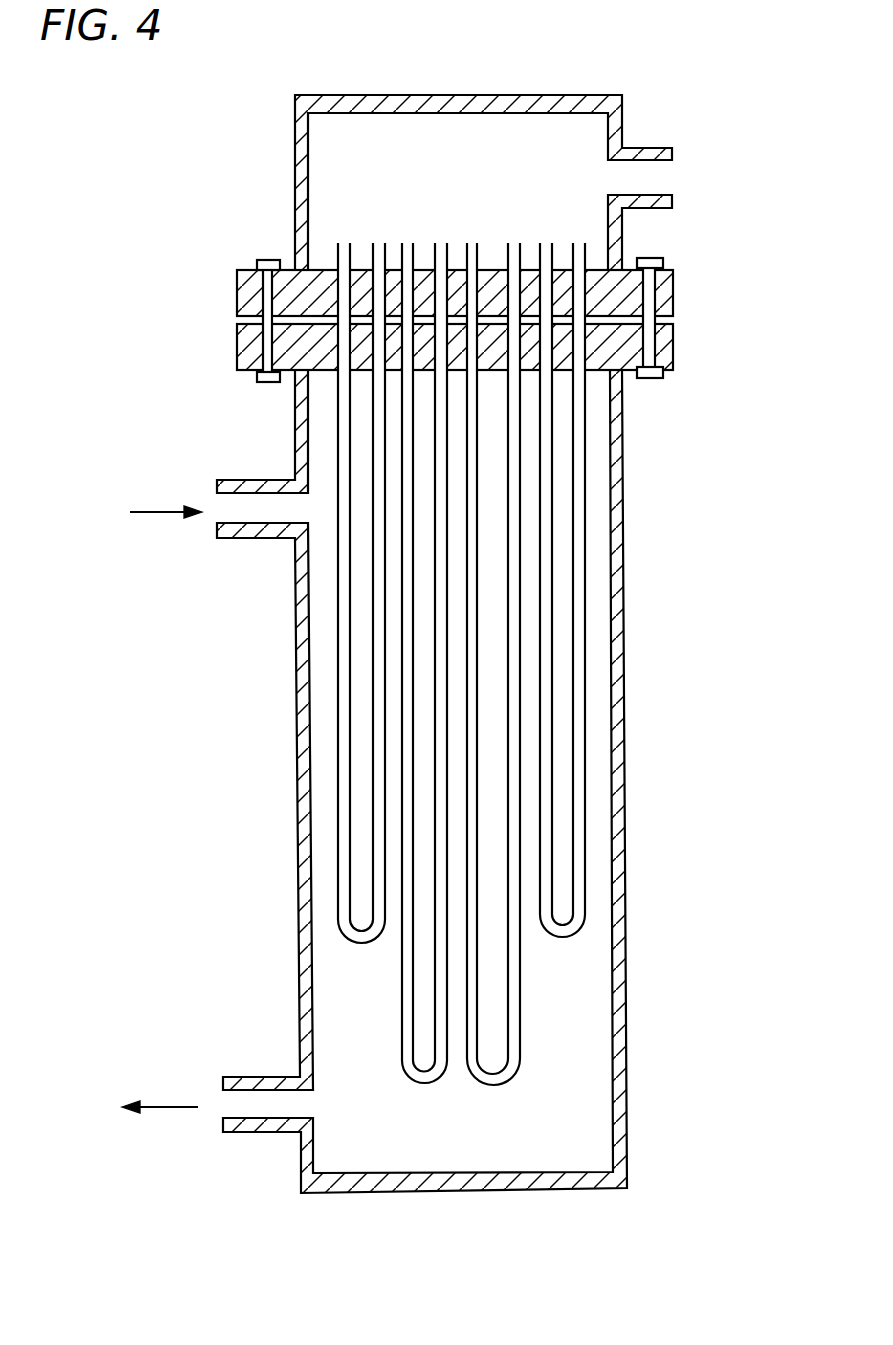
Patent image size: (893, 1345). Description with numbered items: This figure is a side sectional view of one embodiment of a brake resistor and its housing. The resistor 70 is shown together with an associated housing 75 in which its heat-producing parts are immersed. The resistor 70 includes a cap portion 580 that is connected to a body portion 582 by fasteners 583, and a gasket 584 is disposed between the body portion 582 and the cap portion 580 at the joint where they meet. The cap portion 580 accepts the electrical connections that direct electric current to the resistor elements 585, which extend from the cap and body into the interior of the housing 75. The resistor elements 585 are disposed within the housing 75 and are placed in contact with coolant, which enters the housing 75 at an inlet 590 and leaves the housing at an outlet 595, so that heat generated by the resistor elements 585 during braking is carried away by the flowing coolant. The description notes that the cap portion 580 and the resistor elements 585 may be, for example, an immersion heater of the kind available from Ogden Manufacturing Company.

The cap portion 580 is at (578, 95).
The fasteners 583 is at (258, 260).
The gasket 584 is at (300, 314).
The resistor 70 is at (587, 442).
The housing 75 is at (622, 530).
The body portion 582 is at (623, 735).
The inlet 590 is at (238, 538).
The outlet 595 is at (268, 1133).
The resistor elements 585 is at (517, 1078).